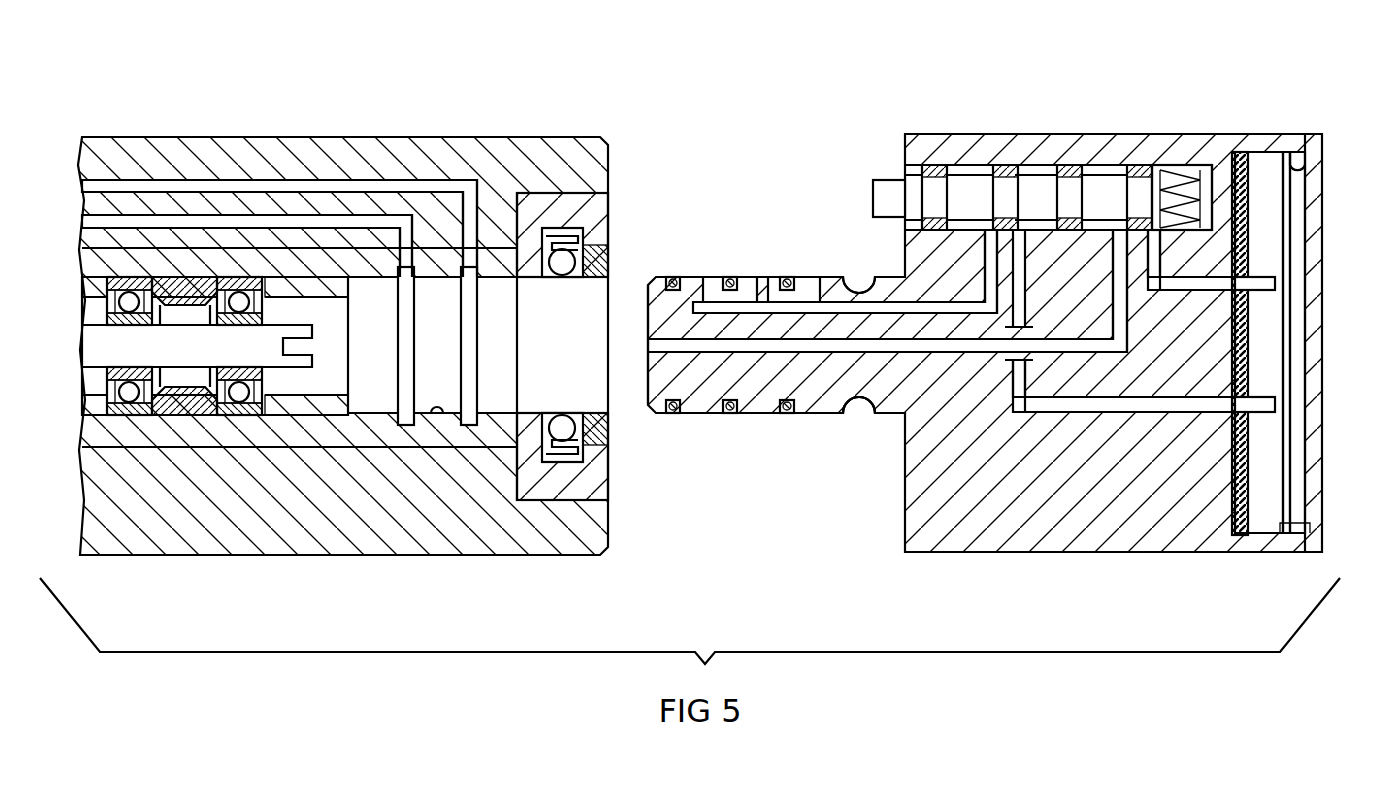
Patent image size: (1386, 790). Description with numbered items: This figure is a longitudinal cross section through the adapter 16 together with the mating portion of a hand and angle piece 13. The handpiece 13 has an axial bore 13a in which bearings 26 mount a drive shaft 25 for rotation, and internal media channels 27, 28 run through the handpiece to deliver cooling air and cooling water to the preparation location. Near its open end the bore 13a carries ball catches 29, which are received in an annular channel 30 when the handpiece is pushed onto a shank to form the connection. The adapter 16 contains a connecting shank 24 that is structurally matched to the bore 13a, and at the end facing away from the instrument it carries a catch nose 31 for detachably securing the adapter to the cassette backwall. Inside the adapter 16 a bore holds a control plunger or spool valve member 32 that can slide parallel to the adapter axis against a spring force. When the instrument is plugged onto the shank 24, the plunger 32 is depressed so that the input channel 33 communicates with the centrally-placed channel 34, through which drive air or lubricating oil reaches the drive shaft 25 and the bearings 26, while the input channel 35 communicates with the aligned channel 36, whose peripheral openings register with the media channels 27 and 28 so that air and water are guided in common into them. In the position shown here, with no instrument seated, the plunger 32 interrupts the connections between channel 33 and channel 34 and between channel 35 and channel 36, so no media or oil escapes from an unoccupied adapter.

The hand and angle piece 13 is at (517, 135).
The axial bore 13a is at (447, 415).
The adapter 16 is at (962, 125).
The connecting shank 24 is at (693, 414).
The drive shaft 25 is at (270, 355).
The bearings 26 is at (133, 413).
The media channel 27 is at (292, 183).
The media channel 28 is at (352, 223).
The ball catches 29 is at (562, 442).
The annular channel 30 is at (860, 414).
The catch nose 31 is at (1300, 162).
The control plunger 32 is at (887, 195).
The input channel 33 is at (1278, 289).
The centrally-placed channel 34 is at (774, 347).
The input channel 35 is at (1278, 403).
The aligned channel 36 is at (808, 305).